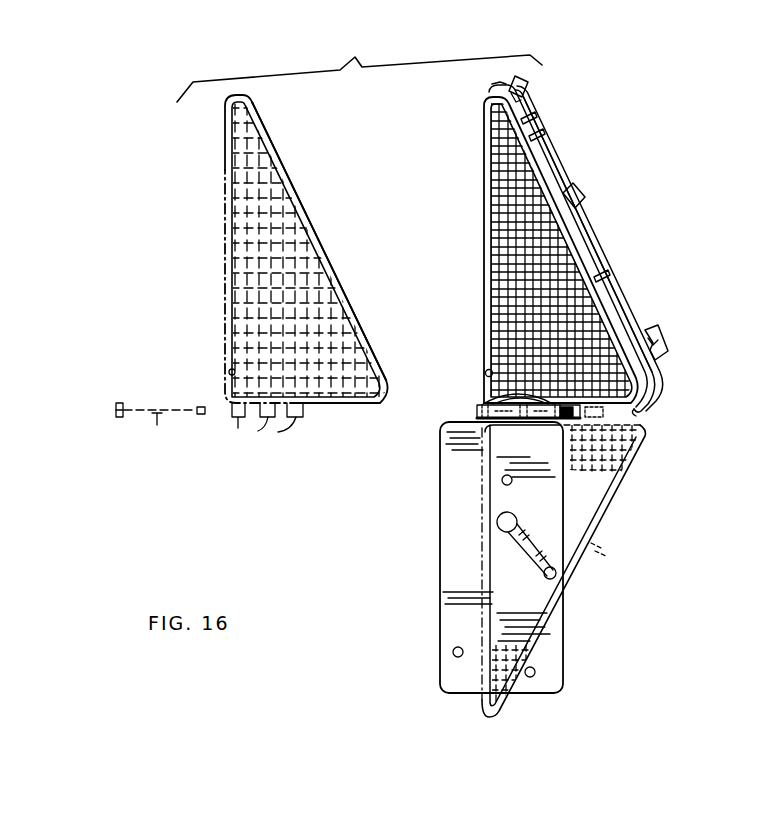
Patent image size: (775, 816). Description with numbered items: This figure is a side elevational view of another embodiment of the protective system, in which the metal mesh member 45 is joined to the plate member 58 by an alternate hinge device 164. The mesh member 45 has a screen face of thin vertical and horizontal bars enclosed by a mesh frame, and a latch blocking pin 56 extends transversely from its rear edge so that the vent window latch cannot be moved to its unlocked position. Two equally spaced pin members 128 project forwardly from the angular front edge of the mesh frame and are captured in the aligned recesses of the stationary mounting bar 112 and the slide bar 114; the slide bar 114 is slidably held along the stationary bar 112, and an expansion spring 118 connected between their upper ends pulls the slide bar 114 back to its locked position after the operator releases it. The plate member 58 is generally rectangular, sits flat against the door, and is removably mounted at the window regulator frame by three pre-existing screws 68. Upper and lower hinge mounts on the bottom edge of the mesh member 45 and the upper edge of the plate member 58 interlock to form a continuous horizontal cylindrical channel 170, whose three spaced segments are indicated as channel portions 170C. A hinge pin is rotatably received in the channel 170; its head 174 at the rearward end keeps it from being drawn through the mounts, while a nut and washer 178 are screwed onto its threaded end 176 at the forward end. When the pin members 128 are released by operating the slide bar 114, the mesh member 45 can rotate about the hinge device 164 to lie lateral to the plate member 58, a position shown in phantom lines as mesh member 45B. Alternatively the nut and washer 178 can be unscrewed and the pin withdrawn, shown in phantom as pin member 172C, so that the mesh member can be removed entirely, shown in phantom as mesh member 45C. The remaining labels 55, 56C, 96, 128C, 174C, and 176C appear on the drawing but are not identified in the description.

The mesh member 45 is at (478, 181).
The mesh member 45B is at (466, 537).
The mesh member 45C is at (225, 256).
The trim strip 55 is at (615, 245).
The latch blocking pin 56 is at (486, 371).
The hole 56C is at (228, 370).
The plate member 58 is at (562, 626).
The screws 68 is at (501, 479).
The clips 96 is at (528, 88).
The stationary mounting bar 112 is at (496, 85).
The slide bar 114 is at (531, 129).
The expansion spring 118 is at (526, 113).
The pin members 128 is at (543, 140).
The frame tube 128C is at (268, 137).
The hinge device 164 is at (658, 407).
The cylindrical channel 170 is at (490, 398).
The channel portions 170C is at (263, 427).
The pin member 172C is at (177, 430).
The head 174 is at (476, 410).
The hinge rod 174C is at (114, 410).
The threaded end 176 is at (566, 419).
The retaining nut 176C is at (172, 399).
The nut and washer 178 is at (612, 412).